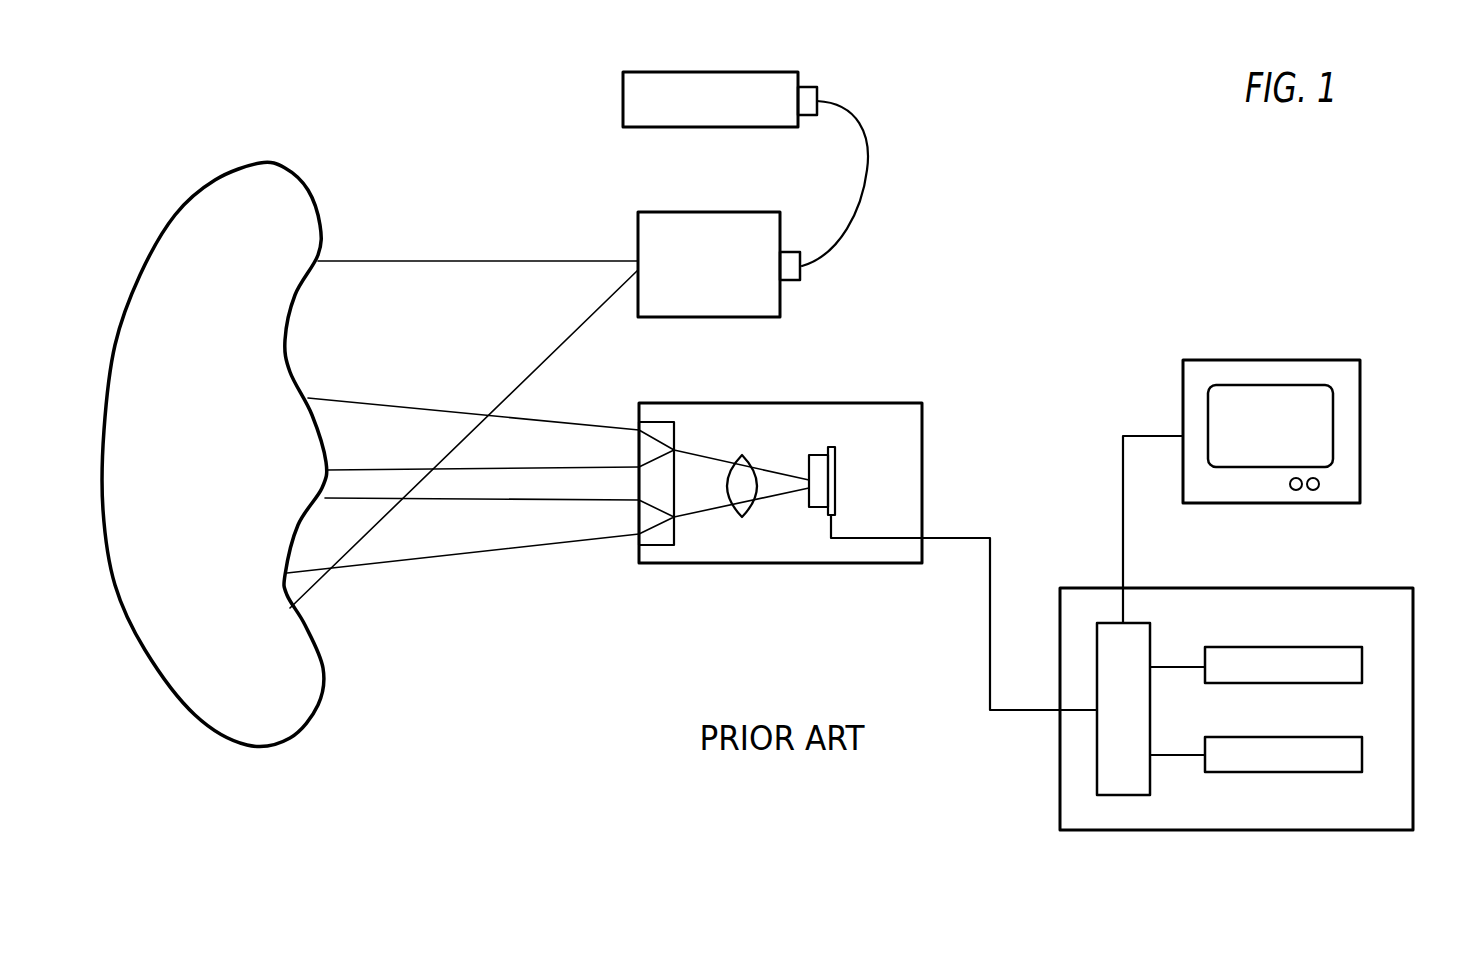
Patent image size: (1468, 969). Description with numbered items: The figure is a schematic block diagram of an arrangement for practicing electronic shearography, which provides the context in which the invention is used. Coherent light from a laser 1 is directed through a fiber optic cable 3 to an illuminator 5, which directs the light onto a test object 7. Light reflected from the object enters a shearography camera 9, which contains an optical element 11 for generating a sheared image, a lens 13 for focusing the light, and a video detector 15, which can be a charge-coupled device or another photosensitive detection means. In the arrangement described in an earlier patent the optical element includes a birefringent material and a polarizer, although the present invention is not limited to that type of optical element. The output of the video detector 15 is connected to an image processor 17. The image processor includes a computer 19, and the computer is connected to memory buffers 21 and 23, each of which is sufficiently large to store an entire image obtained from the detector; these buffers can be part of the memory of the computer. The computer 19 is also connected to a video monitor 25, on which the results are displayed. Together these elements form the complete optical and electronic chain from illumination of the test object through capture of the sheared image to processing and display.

The laser 1 is at (753, 82).
The fiber optic cable 3 is at (866, 149).
The illuminator 5 is at (670, 218).
The test object 7 is at (208, 218).
The shearography camera 9 is at (907, 475).
The optical element 11 is at (658, 430).
The lens 13 is at (742, 457).
The video detector 15 is at (818, 462).
The image processor 17 is at (1403, 645).
The computer 19 is at (1112, 713).
The memory buffer 21 is at (1302, 657).
The memory buffer 23 is at (1302, 760).
The video monitor 25 is at (1313, 372).